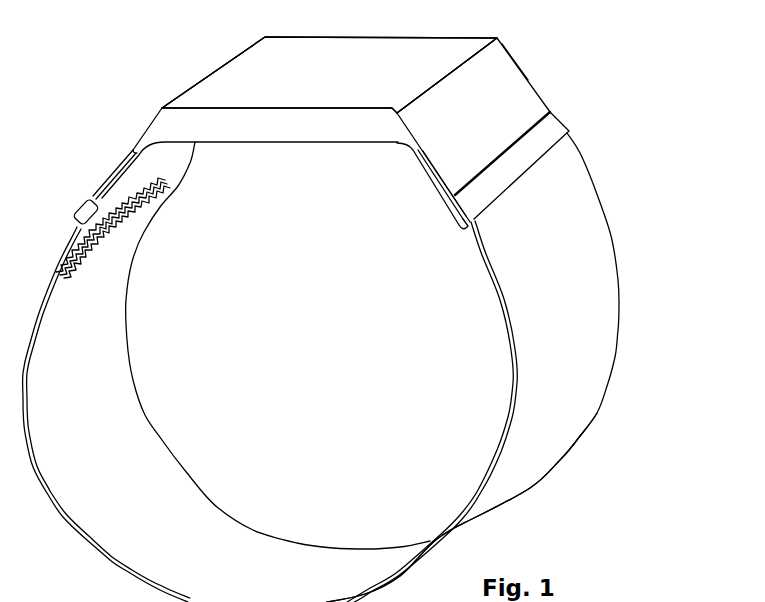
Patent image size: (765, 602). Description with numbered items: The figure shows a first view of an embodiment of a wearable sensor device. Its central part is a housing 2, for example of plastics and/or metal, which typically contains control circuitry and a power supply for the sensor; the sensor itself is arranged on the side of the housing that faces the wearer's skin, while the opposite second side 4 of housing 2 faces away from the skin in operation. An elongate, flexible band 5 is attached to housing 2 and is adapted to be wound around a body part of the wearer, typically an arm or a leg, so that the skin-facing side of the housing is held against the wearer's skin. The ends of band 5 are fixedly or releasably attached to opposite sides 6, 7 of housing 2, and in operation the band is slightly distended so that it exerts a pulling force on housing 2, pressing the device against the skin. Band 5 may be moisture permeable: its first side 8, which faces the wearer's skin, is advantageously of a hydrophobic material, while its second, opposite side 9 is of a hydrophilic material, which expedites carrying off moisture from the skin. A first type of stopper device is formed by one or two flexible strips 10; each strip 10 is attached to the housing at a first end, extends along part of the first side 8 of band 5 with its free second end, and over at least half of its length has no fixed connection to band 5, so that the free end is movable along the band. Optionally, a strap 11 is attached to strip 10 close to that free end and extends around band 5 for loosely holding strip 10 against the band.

The housing 2 is at (319, 37).
The second side 4 is at (395, 62).
The band 5 is at (599, 197).
The side of housing 6 is at (473, 77).
The side of housing 7 is at (197, 72).
The first side of band 8 is at (120, 425).
The second side of band 9 is at (555, 410).
The flexible strip 10 is at (437, 188).
The strap 11 is at (521, 158).